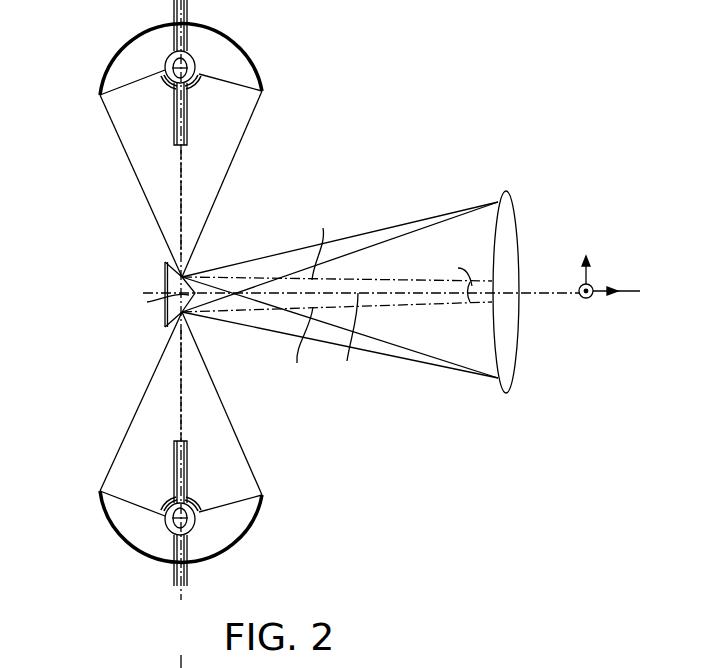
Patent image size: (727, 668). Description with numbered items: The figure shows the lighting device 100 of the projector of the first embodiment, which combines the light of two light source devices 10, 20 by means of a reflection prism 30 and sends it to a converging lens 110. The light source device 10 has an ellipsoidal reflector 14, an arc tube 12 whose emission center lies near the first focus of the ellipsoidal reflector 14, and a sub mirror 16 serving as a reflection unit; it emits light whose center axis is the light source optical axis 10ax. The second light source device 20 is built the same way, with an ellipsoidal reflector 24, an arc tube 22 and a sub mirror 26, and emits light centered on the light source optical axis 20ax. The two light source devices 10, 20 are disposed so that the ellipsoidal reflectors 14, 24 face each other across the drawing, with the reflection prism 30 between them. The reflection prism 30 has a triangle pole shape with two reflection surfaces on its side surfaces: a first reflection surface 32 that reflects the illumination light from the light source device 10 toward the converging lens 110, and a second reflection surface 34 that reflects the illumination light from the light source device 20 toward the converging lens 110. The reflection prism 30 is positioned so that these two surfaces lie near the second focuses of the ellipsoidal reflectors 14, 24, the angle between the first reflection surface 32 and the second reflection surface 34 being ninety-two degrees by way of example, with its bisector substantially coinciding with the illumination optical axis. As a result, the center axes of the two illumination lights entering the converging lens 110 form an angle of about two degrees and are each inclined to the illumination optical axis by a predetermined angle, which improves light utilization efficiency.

The lighting device 100 is at (519, 49).
The light source device 10 is at (52, 128).
The arc tube 12 is at (166, 69).
The ellipsoidal reflector 14 is at (112, 64).
The sub mirror 16 is at (164, 84).
The light source optical axis 10ax is at (180, 194).
The light source device 20 is at (52, 470).
The arc tube 22 is at (167, 518).
The ellipsoidal reflector 24 is at (110, 526).
The sub mirror 26 is at (165, 500).
The light source optical axis 20ax is at (180, 396).
The reflection prism 30 is at (163, 285).
The first reflection surface 32 is at (166, 262).
The second reflection surface 34 is at (166, 327).
The converging lens 110 is at (503, 191).